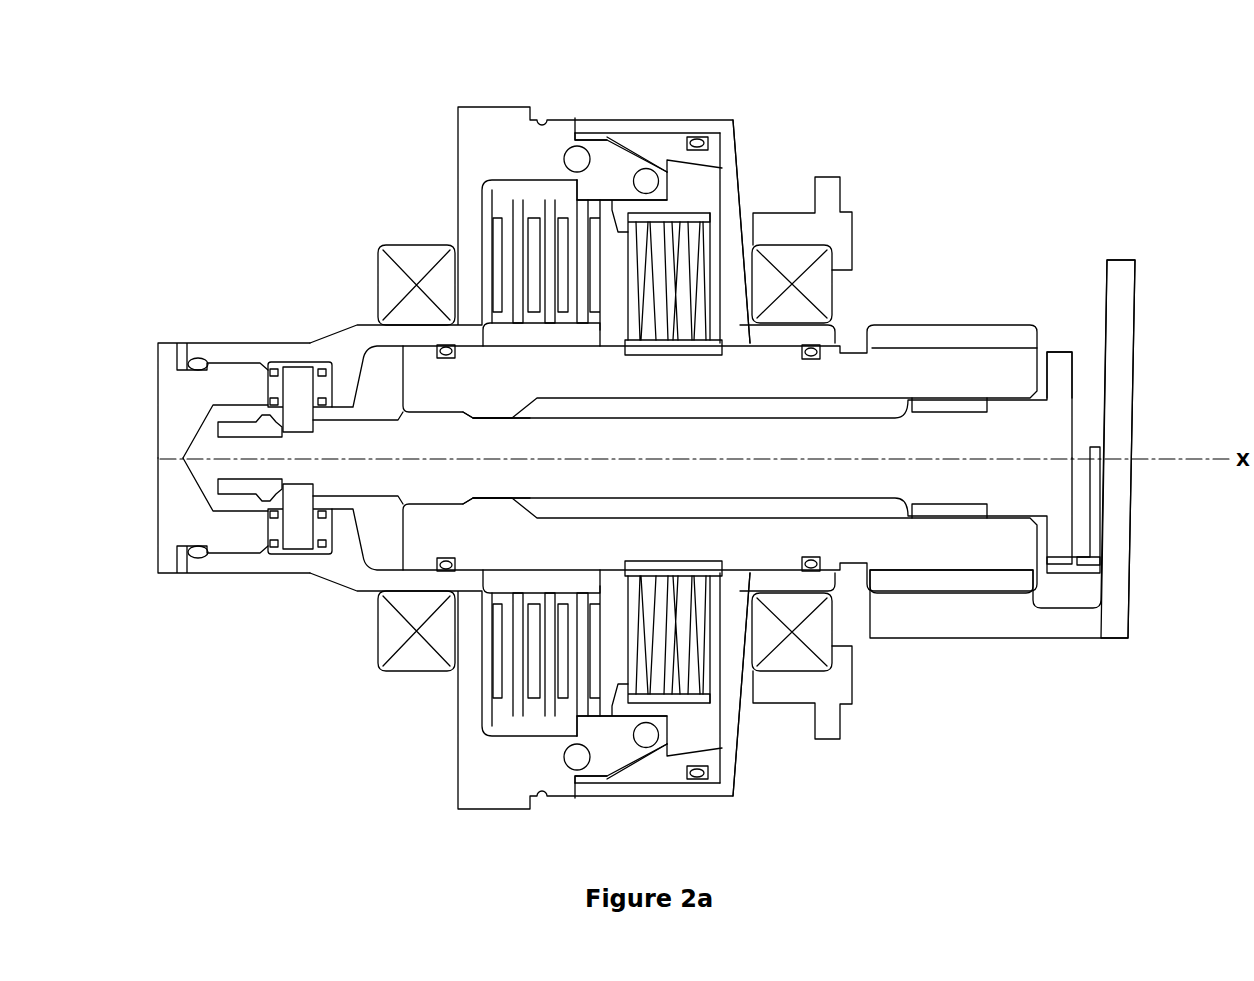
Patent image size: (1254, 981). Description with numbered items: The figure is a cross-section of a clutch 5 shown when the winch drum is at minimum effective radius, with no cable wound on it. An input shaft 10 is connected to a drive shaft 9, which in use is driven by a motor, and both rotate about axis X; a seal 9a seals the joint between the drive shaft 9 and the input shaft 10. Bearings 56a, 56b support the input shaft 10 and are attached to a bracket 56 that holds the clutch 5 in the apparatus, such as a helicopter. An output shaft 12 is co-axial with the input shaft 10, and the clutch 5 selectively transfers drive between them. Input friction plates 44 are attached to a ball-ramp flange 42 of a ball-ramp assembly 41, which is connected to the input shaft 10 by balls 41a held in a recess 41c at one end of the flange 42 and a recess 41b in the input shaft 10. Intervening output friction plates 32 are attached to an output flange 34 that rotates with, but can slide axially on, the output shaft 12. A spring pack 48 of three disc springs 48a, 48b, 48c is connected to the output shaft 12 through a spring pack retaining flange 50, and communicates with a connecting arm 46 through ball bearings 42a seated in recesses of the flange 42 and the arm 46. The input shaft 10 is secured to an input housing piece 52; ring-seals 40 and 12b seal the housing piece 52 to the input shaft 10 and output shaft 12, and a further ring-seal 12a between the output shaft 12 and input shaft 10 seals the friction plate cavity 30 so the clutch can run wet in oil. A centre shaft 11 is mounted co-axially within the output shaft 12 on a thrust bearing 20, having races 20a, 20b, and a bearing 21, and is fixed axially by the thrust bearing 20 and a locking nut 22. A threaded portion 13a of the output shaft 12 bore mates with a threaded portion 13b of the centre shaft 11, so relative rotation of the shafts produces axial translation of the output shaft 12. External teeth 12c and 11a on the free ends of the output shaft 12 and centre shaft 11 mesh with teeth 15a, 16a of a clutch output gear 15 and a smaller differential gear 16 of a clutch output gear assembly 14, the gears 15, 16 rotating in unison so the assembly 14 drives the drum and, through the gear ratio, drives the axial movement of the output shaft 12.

The clutch 5 is at (226, 231).
The drive shaft 9 is at (190, 412).
The seal 9a is at (205, 363).
The input shaft 10 is at (475, 130).
The centre shaft 11 is at (1003, 430).
The external teeth 11a is at (1060, 357).
The output shaft 12 is at (410, 373).
The ring-seal 12a is at (445, 580).
The ring-seal 12b is at (811, 568).
The external teeth 12c is at (947, 338).
The threaded portion of inner surface of output shaft 13a is at (500, 420).
The threaded portion of outer surface of centre shaft 13b is at (440, 414).
The clutch output gear assembly 14 is at (1145, 586).
The clutch output gear 15 is at (1115, 470).
The teeth 15a is at (947, 580).
The differential gear 16 is at (1094, 505).
The teeth 16a is at (1057, 567).
The thrust bearing 20 is at (300, 546).
The bearing race 20a is at (273, 556).
The bearing race 20b is at (326, 556).
The bearing 21 is at (953, 407).
The locking nut 22 is at (213, 487).
The friction plate cavity 30 is at (683, 207).
The output friction plates 32 is at (497, 263).
The output flange 34 is at (480, 330).
The ring-seal 40 is at (702, 128).
The ball-ramp assembly 41 is at (605, 137).
The balls 41a is at (574, 146).
The recess 41b is at (568, 150).
The recess 41c is at (586, 134).
The ball-ramp flange 42 is at (618, 178).
The ball bearings 42a is at (650, 166).
The input friction plates 44 is at (487, 233).
The connecting arm 46 is at (657, 207).
The spring pack 48 is at (705, 432).
The disc spring 48a is at (637, 239).
The disc spring 48b is at (668, 260).
The disc spring 48c is at (700, 283).
The spring pack retaining flange 50 is at (680, 350).
The input housing piece 52 is at (735, 148).
The bracket 56 is at (823, 688).
The bearing 56a is at (405, 630).
The bearing 56b is at (784, 633).